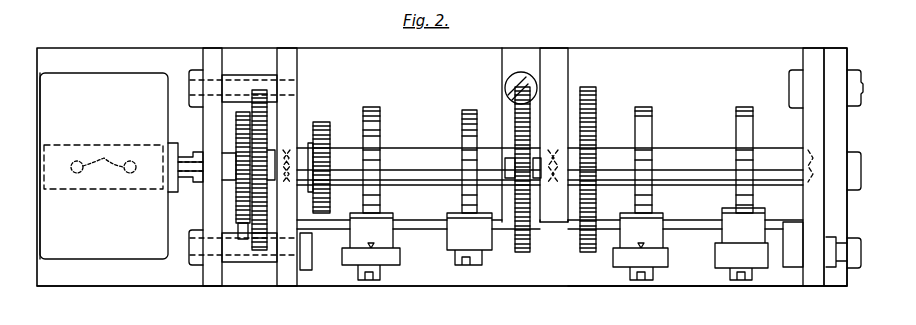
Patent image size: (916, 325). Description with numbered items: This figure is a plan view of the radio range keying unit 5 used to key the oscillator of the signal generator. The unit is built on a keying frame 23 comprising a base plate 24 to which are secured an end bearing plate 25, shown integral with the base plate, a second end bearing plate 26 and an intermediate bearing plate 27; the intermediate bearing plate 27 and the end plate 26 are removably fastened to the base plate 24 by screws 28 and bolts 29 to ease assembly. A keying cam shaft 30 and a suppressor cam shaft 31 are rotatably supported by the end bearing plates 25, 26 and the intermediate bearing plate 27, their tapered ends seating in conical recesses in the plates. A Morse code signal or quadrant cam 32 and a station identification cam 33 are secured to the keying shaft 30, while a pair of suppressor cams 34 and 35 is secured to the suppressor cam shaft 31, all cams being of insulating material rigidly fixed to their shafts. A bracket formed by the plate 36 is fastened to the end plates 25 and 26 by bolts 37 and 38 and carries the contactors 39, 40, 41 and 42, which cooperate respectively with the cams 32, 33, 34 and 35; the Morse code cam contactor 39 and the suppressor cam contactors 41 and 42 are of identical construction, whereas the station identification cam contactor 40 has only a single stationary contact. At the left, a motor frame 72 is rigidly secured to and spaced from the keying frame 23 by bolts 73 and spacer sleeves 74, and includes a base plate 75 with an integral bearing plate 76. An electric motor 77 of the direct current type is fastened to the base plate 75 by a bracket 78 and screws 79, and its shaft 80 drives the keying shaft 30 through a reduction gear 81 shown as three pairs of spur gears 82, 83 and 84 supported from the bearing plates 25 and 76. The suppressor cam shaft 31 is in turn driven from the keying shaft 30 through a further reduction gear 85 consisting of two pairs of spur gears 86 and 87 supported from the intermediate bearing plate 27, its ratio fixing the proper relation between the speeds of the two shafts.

The radio range keying unit 5 is at (419, 80).
The keying frame 23 is at (727, 286).
The base plate 24 is at (624, 286).
The end bearing plate 25 is at (290, 48).
The end bearing plate 26 is at (810, 58).
The intermediate bearing plate 27 is at (569, 72).
The screws 28 is at (502, 155).
The bolts 29 is at (862, 96).
The keying cam shaft 30 is at (416, 147).
The suppressor cam shaft 31 is at (692, 147).
The Morse code signal or quadrant cam 32 is at (374, 108).
The station identification cam 33 is at (470, 109).
The suppressor cam 34 is at (645, 108).
The suppressor cam 35 is at (740, 108).
The bracket plate 36 is at (559, 230).
The bolt 37 is at (316, 254).
The bolt 38 is at (830, 234).
The Morse code cam contactor 39 is at (394, 252).
The station identification cam contactor 40 is at (448, 252).
The suppressor cam contactor 41 is at (664, 252).
The suppressor cam contactor 42 is at (720, 258).
The motor frame 72 is at (131, 286).
The bolts 73 is at (190, 76).
The spacer sleeves 74 is at (240, 74).
The base plate 75 is at (72, 286).
The bearing plate 76 is at (212, 48).
The electric motor 77 is at (43, 235).
The bracket 78 is at (60, 146).
The screws 79 is at (103, 160).
The motor shaft 80 is at (186, 192).
The reduction gear 81 is at (242, 225).
The spur gears 82 is at (235, 118).
The spur gears 83 is at (266, 140).
The spur gears 84 is at (324, 142).
The reduction gear 85 is at (520, 256).
The spur gears 86 is at (533, 103).
The spur gears 87 is at (598, 104).